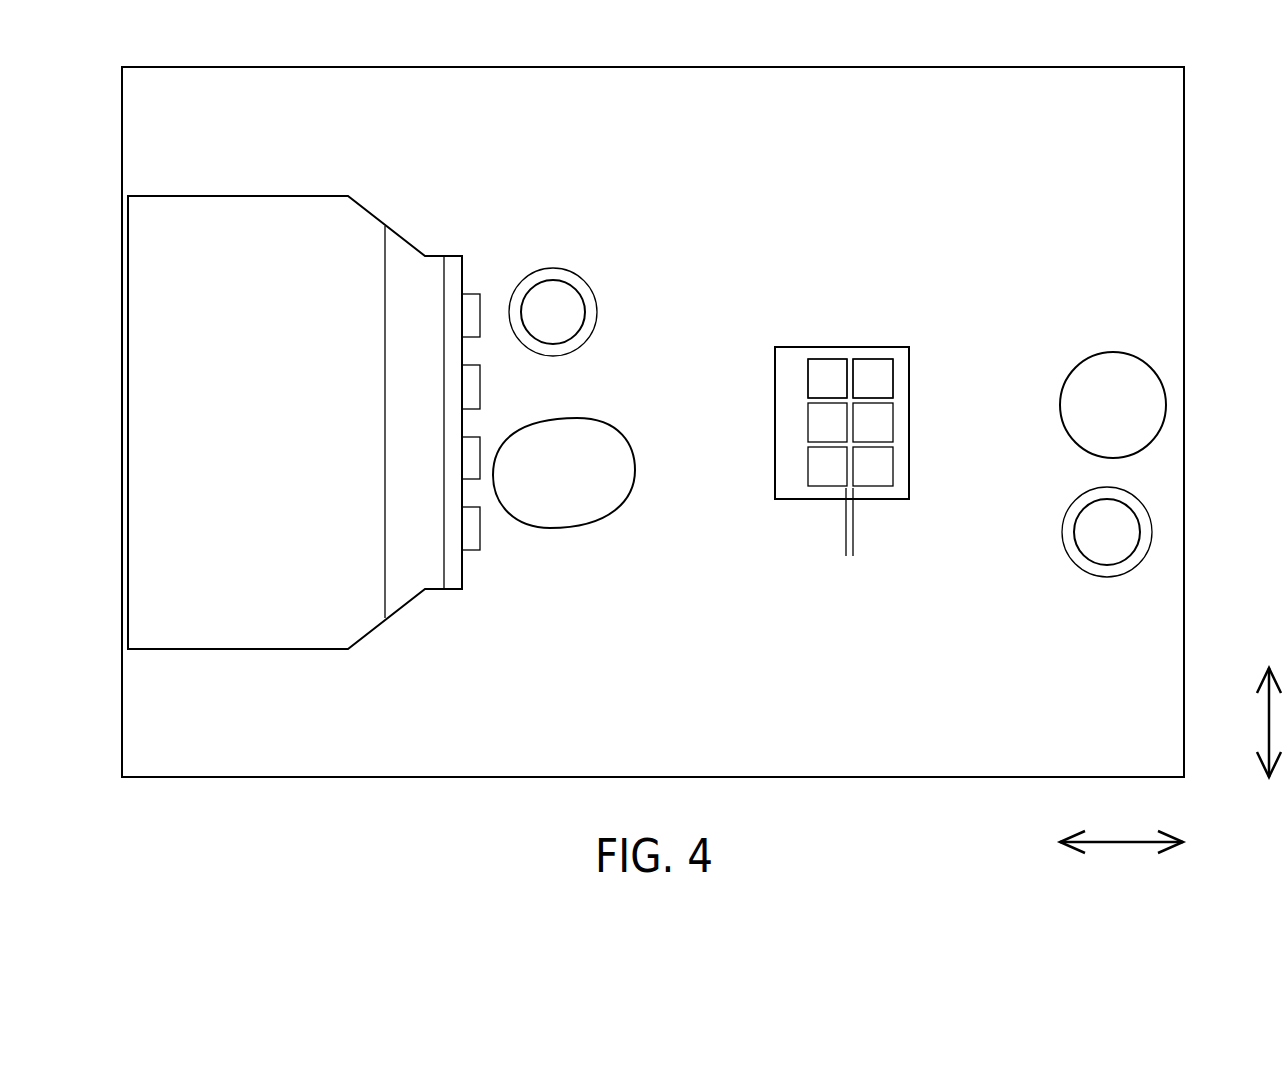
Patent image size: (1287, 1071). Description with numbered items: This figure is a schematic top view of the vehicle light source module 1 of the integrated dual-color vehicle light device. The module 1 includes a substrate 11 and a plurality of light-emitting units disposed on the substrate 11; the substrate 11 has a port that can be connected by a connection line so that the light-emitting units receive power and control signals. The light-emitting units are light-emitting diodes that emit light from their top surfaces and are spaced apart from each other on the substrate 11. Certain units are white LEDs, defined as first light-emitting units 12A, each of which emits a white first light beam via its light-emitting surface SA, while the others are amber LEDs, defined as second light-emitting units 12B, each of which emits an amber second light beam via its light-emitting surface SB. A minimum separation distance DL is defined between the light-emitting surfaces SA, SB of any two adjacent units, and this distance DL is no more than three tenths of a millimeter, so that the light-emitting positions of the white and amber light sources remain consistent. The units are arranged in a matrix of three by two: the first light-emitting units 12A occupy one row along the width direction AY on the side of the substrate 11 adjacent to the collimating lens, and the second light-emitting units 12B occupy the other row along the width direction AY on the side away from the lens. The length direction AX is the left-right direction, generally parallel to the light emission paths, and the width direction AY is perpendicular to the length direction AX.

The vehicle light source module 1 is at (489, 74).
The substrate 11 is at (869, 95).
The first light-emitting unit 12A is at (818, 381).
The second light-emitting unit 12B is at (880, 381).
The light-emitting surface SA is at (828, 368).
The light-emitting surface SB is at (868, 368).
The minimum separation distance DL is at (882, 548).
The length direction AX is at (1121, 826).
The width direction AY is at (1247, 722).